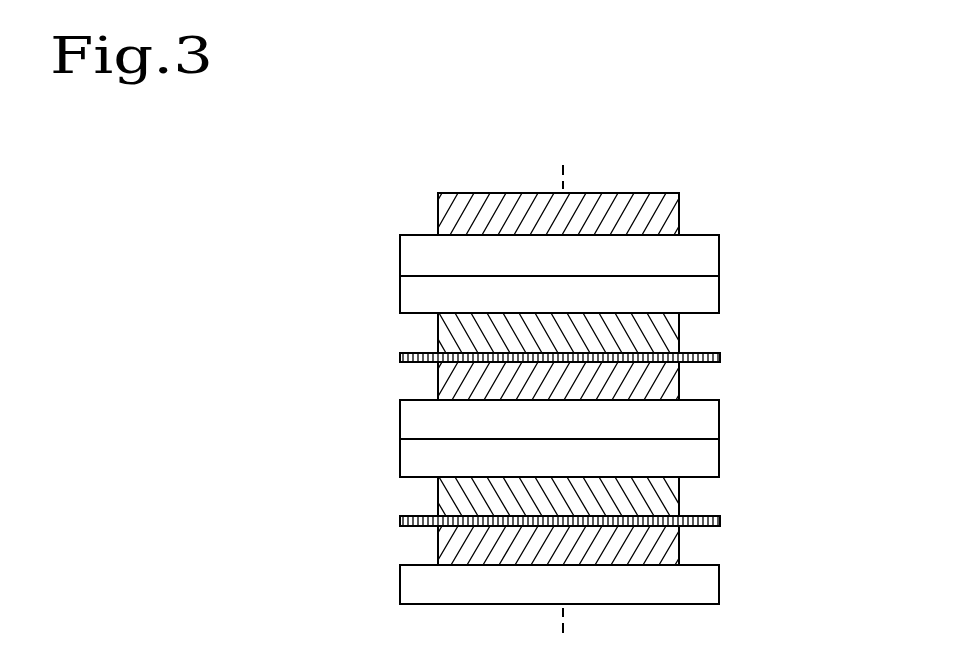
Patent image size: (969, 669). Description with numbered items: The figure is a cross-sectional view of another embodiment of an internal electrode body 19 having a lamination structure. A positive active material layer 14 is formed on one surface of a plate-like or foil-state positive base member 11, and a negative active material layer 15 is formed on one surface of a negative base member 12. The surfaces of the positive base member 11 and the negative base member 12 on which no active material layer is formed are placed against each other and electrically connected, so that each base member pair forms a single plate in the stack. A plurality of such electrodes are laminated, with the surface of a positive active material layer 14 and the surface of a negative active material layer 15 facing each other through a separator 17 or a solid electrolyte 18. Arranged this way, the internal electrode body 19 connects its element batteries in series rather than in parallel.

The positive base member 11 is at (688, 250).
The negative base member 12 is at (693, 293).
The positive active material layer 14 is at (660, 207).
The negative active material layer 15 is at (660, 340).
The separator 17 is at (420, 362).
The solid electrolyte 18 is at (560, 439).
The internal electrode body 19 is at (673, 188).